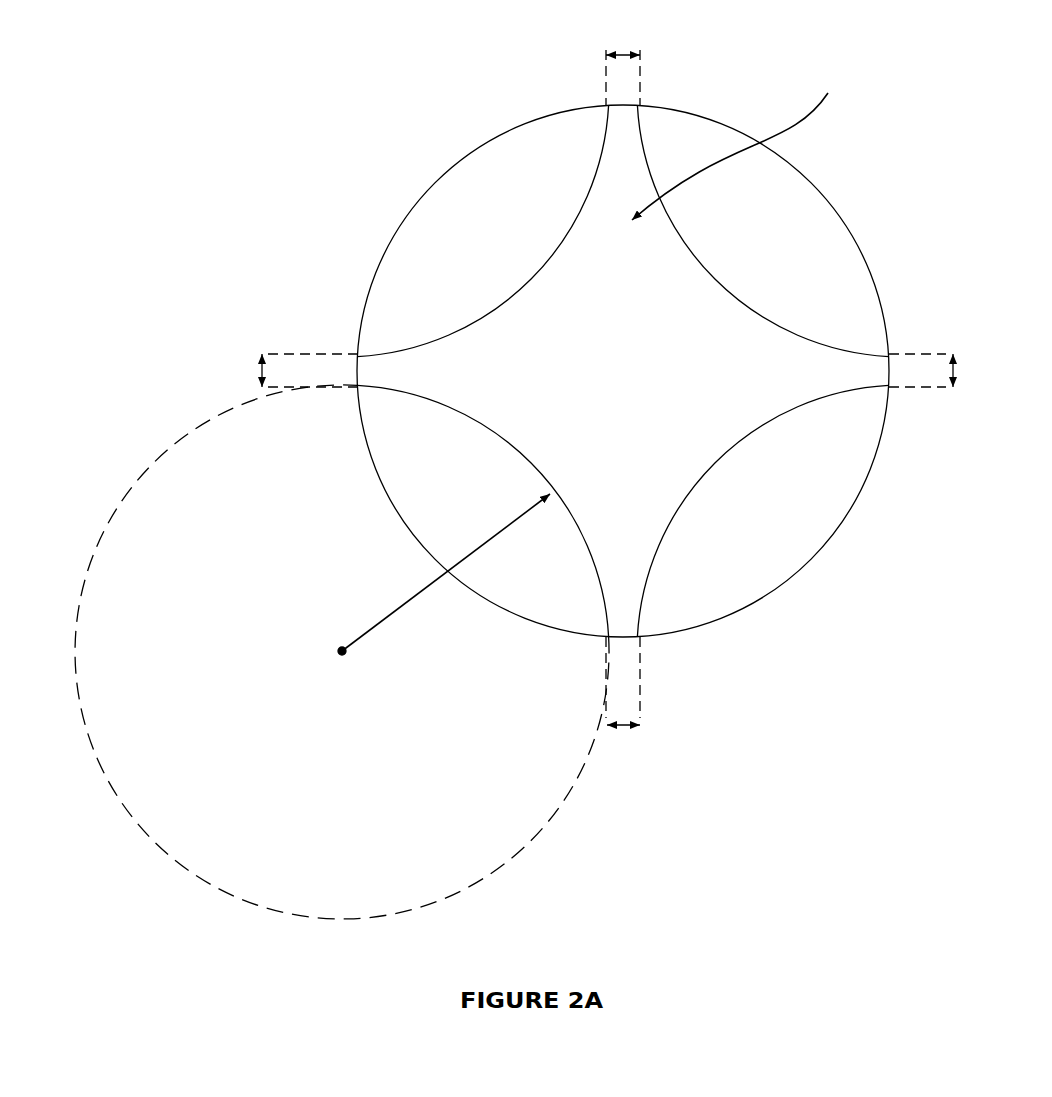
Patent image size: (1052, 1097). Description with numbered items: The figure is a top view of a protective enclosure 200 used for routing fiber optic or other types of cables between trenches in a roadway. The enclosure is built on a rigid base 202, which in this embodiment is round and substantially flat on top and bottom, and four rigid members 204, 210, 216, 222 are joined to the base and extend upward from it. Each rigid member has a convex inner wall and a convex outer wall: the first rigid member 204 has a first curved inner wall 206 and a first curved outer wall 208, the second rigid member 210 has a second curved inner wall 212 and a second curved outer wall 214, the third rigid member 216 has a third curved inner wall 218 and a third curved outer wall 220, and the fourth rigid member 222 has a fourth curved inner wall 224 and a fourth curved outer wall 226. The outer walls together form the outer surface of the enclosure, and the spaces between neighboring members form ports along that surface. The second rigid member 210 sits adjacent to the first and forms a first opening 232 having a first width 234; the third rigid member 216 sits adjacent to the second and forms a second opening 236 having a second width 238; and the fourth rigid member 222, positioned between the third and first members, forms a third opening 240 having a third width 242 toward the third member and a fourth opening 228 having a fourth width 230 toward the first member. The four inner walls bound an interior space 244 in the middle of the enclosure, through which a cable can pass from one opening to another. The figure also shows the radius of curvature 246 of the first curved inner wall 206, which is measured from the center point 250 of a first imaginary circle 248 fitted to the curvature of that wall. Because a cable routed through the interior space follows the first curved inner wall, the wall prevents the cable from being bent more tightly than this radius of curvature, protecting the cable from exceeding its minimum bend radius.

The protective enclosure 200 is at (380, 148).
The rigid base 202 is at (643, 374).
The first rigid member 204 is at (490, 515).
The first curved inner wall 206 is at (515, 448).
The first curved outer wall 208 is at (549, 627).
The second rigid member 210 is at (756, 504).
The second curved inner wall 212 is at (737, 448).
The second curved outer wall 214 is at (783, 584).
The third rigid member 216 is at (756, 222).
The third curved inner wall 218 is at (713, 278).
The third curved outer wall 220 is at (714, 121).
The fourth rigid member 222 is at (490, 226).
The fourth curved inner wall 224 is at (533, 278).
The fourth curved outer wall 226 is at (517, 127).
The fourth opening 228 is at (357, 376).
The fourth width 230 is at (258, 370).
The first opening 232 is at (623, 637).
The first width 234 is at (623, 725).
The second opening 236 is at (889, 376).
The second width 238 is at (958, 372).
The third opening 240 is at (623, 105).
The third width 242 is at (623, 55).
The interior space 244 is at (741, 143).
The radius of curvature 246 is at (388, 616).
The first imaginary circle 248 is at (566, 795).
The center point 250 is at (342, 655).